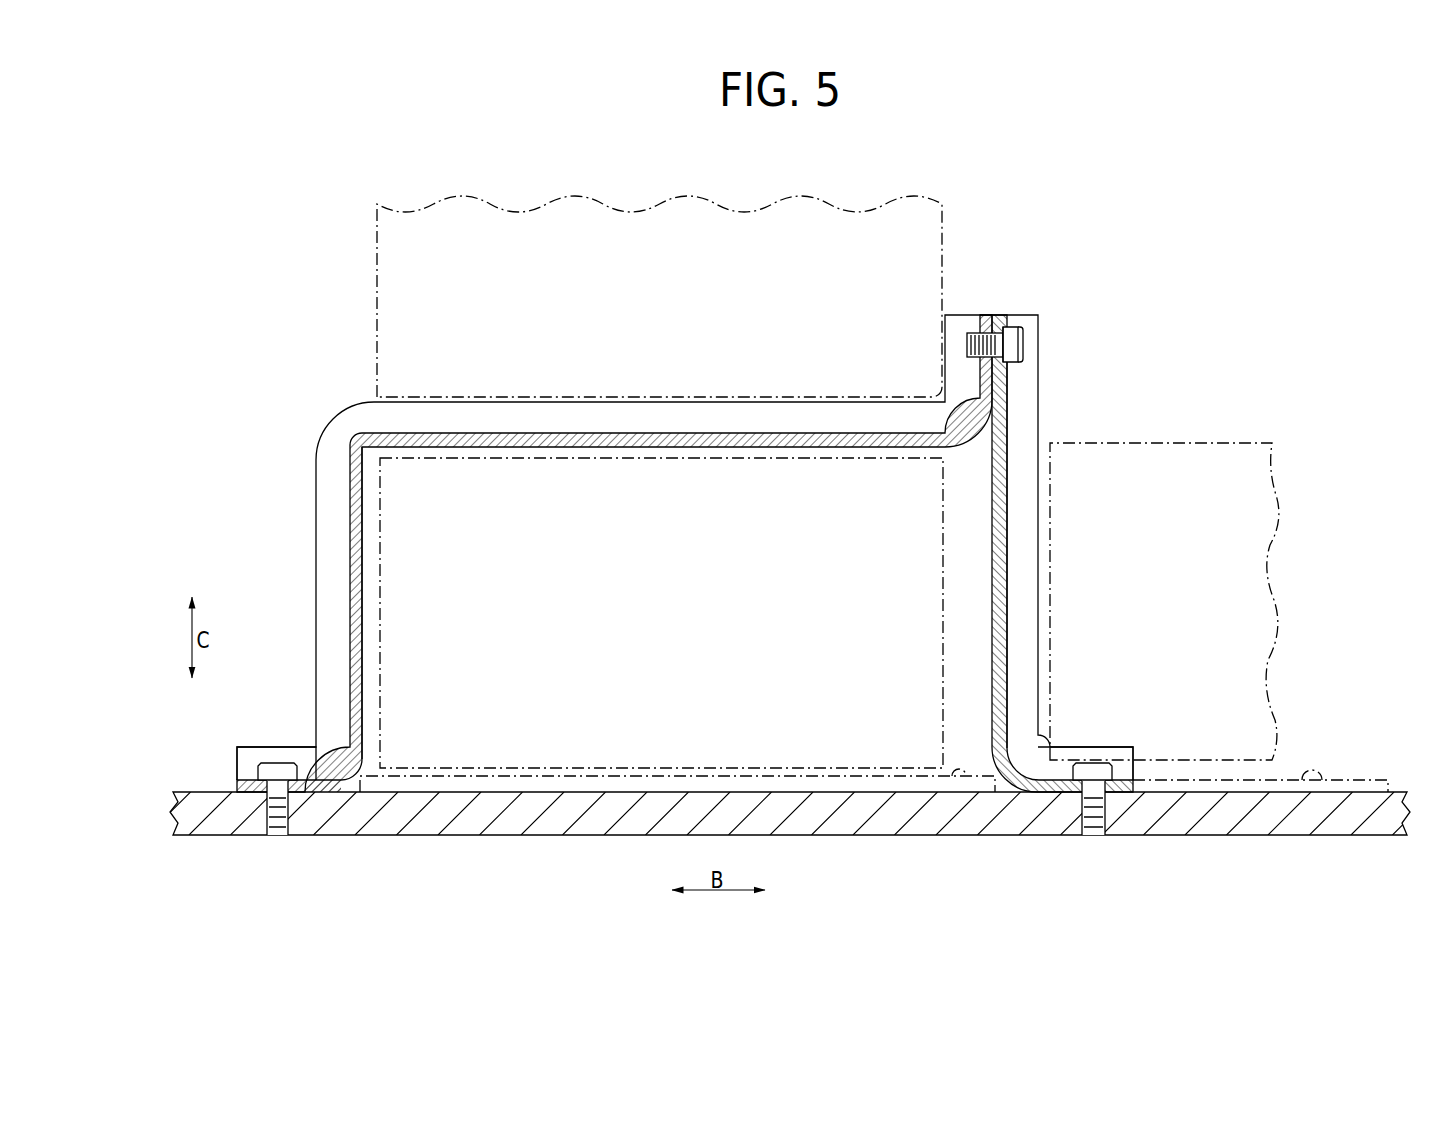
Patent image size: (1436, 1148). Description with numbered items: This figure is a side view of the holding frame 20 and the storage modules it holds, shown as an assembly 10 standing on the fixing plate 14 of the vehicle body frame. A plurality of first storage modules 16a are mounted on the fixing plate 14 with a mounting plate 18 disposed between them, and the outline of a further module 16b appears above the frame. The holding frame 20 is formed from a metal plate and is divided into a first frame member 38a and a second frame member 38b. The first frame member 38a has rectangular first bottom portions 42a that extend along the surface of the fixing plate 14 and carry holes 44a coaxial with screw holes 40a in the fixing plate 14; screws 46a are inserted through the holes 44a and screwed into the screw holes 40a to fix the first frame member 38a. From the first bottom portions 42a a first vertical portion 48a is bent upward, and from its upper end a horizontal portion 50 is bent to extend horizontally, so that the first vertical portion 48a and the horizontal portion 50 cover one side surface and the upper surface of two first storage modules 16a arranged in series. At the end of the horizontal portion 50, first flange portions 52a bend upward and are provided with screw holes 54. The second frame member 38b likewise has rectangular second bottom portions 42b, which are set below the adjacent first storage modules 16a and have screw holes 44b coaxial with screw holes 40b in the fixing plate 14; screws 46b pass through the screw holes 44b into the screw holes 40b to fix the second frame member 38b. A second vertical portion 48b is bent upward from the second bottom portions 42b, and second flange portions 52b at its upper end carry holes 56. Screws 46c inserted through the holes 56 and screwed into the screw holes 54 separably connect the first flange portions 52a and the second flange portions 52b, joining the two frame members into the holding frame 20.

The battery mounting structure 10 is at (685, 512).
The fixing plate 14 is at (427, 837).
The first storage module 16a is at (378, 580).
The second battery 16b is at (378, 256).
The mounting plate 18 is at (966, 776).
The holding frame 20 is at (538, 400).
The first frame member 38a is at (348, 492).
The second frame member 38b is at (1010, 428).
The screw hole 40a is at (287, 813).
The screw hole 40b is at (1098, 815).
The first bottom portion 42a is at (248, 778).
The second bottom portion 42b is at (1125, 746).
The hole 44a is at (262, 786).
The screw hole 44b is at (1088, 773).
The screw 46a is at (276, 768).
The screw 46b is at (1081, 772).
The screw 46c is at (1017, 348).
The first vertical portion 48a is at (352, 527).
The second vertical portion 48b is at (1008, 520).
The horizontal portion 50 is at (657, 432).
The first flange portion 52a is at (975, 322).
The second flange portion 52b is at (1010, 375).
The screw hole 54 is at (992, 352).
The hole 56 is at (1003, 337).